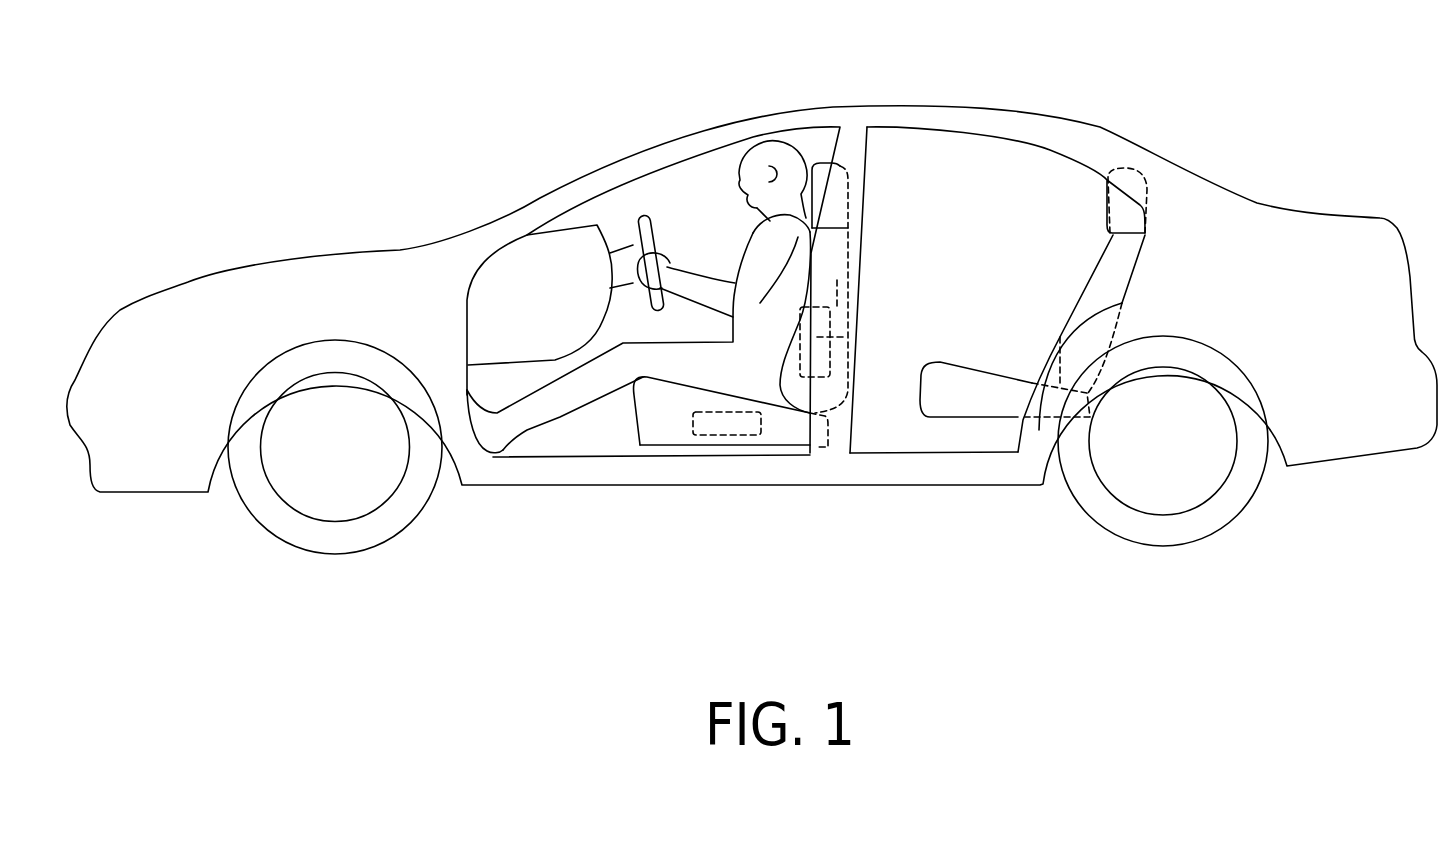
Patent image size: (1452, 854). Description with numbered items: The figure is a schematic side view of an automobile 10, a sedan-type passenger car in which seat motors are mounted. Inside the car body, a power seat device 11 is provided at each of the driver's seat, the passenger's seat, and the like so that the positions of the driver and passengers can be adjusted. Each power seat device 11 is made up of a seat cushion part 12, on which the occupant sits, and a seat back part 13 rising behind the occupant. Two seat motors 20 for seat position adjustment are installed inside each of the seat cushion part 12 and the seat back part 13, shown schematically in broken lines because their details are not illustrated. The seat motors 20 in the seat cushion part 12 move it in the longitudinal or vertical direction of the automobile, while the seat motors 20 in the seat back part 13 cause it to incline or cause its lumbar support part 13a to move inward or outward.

The automobile 10 is at (353, 298).
The power seat device 11 is at (663, 445).
The seat cushion part 12 is at (787, 425).
The seat back part 13 is at (830, 275).
The lumbar support part 13a is at (792, 338).
The seat motor 20 is at (730, 423).